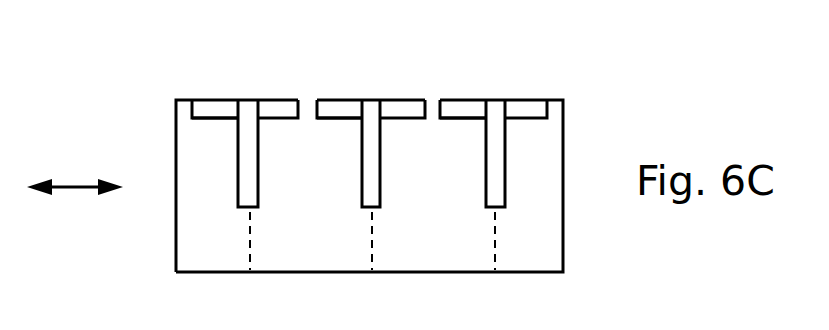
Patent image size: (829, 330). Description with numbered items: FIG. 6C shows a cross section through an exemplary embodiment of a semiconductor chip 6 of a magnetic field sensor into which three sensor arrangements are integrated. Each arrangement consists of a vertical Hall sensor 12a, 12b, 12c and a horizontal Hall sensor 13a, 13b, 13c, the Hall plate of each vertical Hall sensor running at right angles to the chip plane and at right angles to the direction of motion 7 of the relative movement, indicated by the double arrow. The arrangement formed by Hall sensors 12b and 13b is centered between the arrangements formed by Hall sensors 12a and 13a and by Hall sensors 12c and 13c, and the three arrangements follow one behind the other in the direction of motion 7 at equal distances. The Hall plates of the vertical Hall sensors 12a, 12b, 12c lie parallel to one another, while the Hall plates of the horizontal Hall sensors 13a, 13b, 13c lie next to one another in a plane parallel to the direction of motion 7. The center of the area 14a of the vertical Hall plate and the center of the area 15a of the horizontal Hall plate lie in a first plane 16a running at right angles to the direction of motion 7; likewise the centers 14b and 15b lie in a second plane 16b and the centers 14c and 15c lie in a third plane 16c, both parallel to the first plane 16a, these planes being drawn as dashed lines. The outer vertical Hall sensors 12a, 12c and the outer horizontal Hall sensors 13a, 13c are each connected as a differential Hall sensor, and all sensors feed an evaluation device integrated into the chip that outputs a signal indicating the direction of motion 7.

The semiconductor chip 6 is at (556, 205).
The direction of motion 7 is at (75, 171).
The vertical Hall sensor 12a is at (212, 108).
The vertical Hall sensor 12b is at (337, 108).
The vertical Hall sensor 12c is at (459, 108).
The horizontal Hall sensor 13a is at (250, 187).
The horizontal Hall sensor 13b is at (365, 183).
The horizontal Hall sensor 13c is at (498, 185).
The center of the area of the Hall plate of the vertical Hall sensor 14a is at (247, 106).
The center of the area of the Hall plate of the vertical Hall sensor 14b is at (373, 106).
The center of the area of the Hall plate of the vertical Hall sensor 14c is at (498, 106).
The center of the area of the Hall plate of the horizontal Hall sensor 15a is at (244, 157).
The center of the area of the Hall plate of the horizontal Hall sensor 15b is at (367, 158).
The center of the area of the Hall plate of the horizontal Hall sensor 15c is at (492, 155).
The first plane 16a is at (253, 257).
The second plane 16b is at (377, 258).
The third plane 16c is at (517, 240).